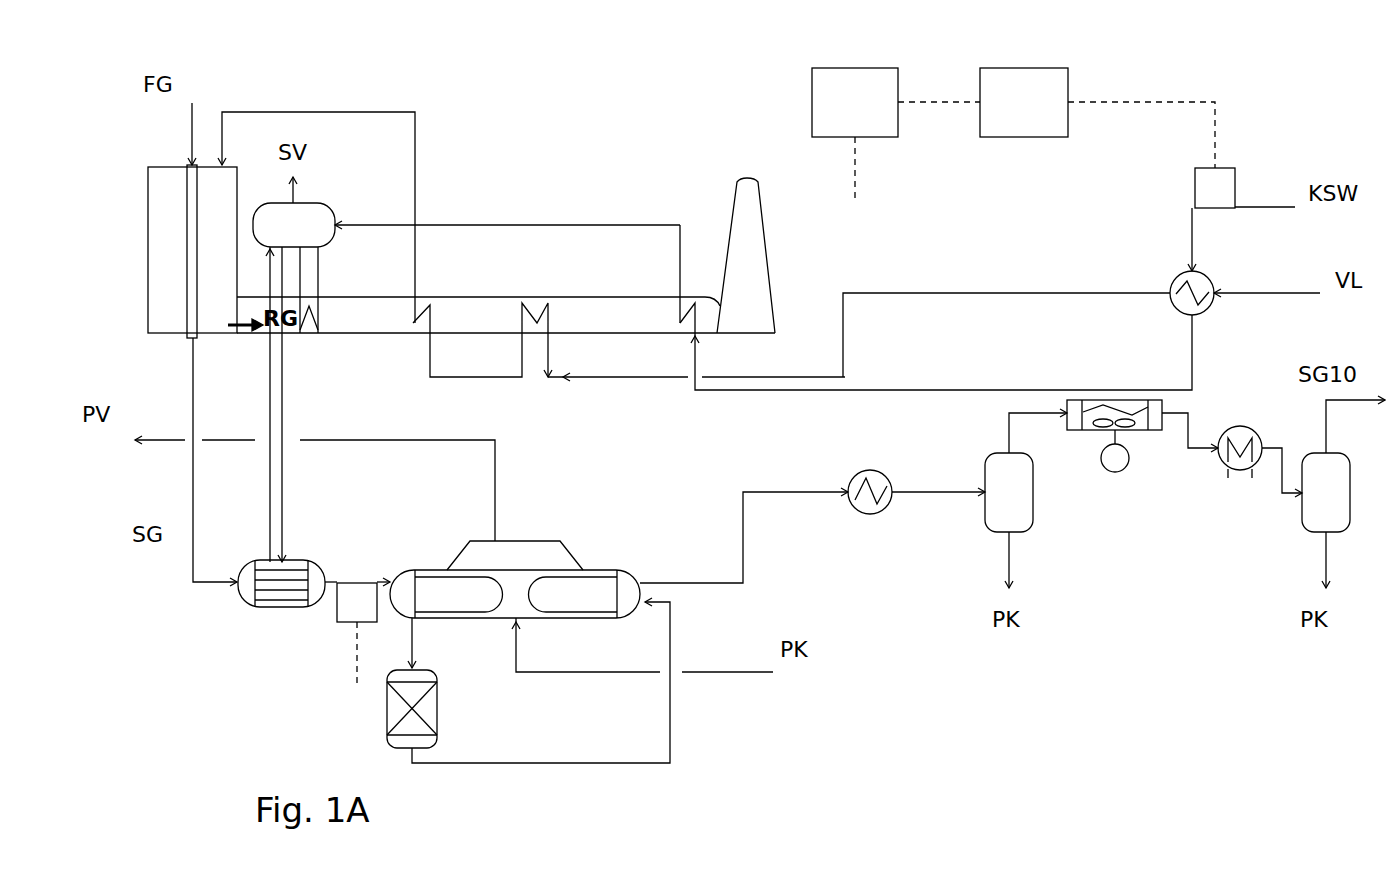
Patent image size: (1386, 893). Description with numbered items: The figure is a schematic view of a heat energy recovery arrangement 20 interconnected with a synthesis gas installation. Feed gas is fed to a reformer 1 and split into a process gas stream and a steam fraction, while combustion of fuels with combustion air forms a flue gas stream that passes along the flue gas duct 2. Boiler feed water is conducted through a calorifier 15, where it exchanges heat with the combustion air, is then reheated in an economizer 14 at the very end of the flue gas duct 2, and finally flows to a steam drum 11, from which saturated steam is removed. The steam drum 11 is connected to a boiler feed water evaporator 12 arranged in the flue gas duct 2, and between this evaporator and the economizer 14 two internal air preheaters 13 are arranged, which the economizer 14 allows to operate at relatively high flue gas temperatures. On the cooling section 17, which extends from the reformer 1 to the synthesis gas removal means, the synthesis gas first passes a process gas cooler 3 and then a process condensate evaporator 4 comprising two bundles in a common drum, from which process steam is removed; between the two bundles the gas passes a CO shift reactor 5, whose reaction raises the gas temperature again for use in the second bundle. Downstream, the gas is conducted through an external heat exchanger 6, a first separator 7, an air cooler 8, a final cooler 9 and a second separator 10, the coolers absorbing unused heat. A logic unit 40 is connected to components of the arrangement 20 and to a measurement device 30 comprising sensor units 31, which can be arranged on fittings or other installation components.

The reformer 1 is at (192, 251).
The flue gas duct 2 is at (506, 256).
The process gas cooler 3 is at (291, 472).
The PK evaporator 4 is at (619, 625).
The CO shift reactor 5 is at (419, 708).
The external heat exchanger 6 is at (916, 486).
The first separator 7 is at (1026, 498).
The air cooler 8 is at (1142, 436).
The final cooler 9 is at (1260, 453).
The second separator 10 is at (1343, 492).
The steam drum 11 is at (466, 369).
The KSW evaporator 12 is at (322, 318).
The internal air preheater 13 is at (629, 342).
The economizer 14 is at (936, 346).
The calorifier 15 is at (1081, 292).
The cooling section 17 is at (272, 653).
The heat energy recovery arrangement 20 is at (569, 155).
The measurement device 30 is at (1024, 102).
The sensor unit 31 is at (816, 393).
The logic unit 40 is at (896, 135).